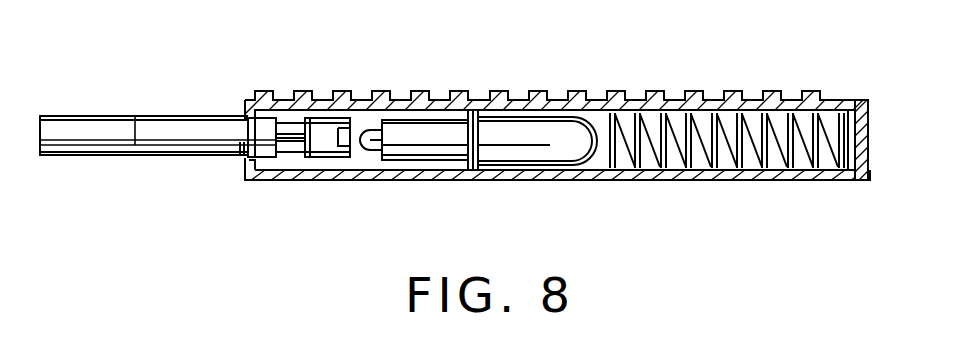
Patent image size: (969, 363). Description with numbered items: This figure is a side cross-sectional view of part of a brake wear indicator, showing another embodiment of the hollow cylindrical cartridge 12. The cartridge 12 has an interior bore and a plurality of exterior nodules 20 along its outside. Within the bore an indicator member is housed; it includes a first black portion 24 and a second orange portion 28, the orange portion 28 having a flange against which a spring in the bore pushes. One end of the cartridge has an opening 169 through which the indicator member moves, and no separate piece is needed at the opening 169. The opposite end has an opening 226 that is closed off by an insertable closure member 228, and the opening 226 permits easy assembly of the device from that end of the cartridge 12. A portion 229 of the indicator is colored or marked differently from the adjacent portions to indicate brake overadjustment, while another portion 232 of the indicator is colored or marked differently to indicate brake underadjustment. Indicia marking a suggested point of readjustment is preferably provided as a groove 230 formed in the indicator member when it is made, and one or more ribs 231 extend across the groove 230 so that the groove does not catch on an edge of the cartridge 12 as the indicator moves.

The hollow cylindrical cartridge 12 is at (663, 180).
The exterior nodules 20 is at (379, 90).
The first black portion 24 is at (153, 140).
The second orange portion 28 is at (538, 140).
The opening 169 is at (243, 147).
The opening 226 is at (868, 180).
The insertable closure member 228 is at (867, 102).
The portion of the indicator 229 is at (122, 99).
The groove 230 is at (285, 130).
The ribs 231 is at (283, 137).
The portion of the indicator 232 is at (435, 128).